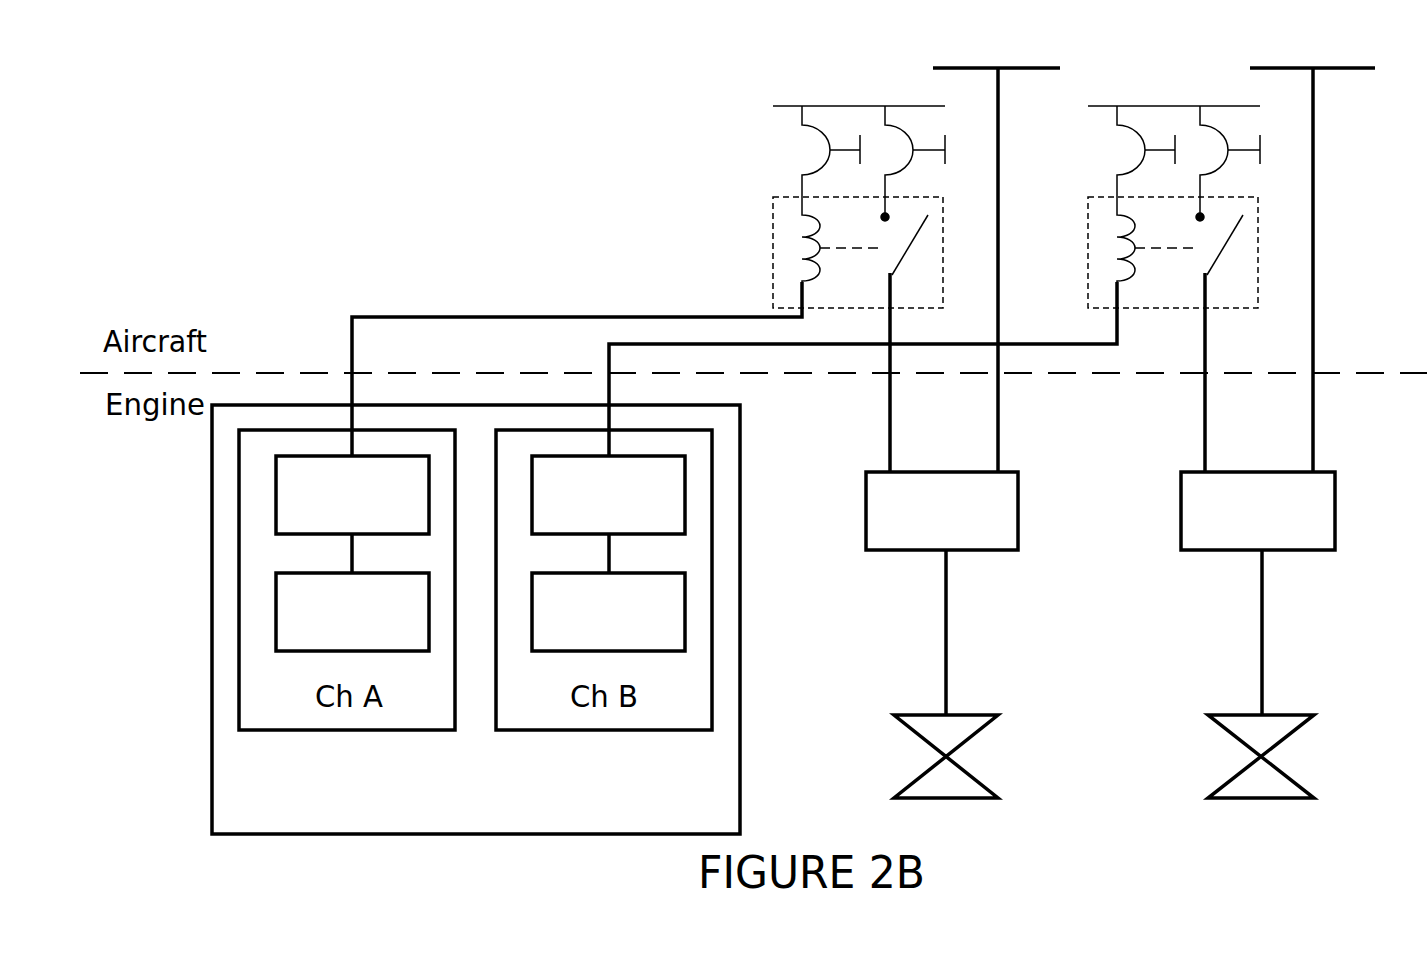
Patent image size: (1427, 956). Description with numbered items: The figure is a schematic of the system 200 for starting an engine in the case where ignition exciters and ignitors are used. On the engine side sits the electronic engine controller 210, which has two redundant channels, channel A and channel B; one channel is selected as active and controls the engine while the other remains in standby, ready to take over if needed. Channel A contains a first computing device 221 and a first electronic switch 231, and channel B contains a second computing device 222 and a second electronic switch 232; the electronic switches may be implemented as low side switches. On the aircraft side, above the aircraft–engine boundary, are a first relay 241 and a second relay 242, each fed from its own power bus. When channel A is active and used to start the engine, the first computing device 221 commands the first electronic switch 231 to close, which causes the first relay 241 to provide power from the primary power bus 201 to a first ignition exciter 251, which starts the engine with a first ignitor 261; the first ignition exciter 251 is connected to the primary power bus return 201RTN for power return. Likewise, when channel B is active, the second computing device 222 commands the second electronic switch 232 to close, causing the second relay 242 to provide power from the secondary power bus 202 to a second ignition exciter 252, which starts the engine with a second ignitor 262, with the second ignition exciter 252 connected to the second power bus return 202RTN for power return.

The system for starting an engine 200 is at (340, 95).
The primary power bus 201 is at (860, 107).
The primary power bus return 201RTN is at (1040, 68).
The secondary power bus 202 is at (1173, 136).
The second power bus return 202RTN is at (1358, 68).
The electronic engine controller 210 is at (450, 812).
The first computing device 221 is at (326, 631).
The second computing device 222 is at (583, 631).
The first electronic switch 231 is at (326, 514).
The second electronic switch 232 is at (583, 514).
The first relay 241 is at (752, 139).
The second relay 242 is at (1133, 207).
The first ignition exciter 251 is at (916, 527).
The second ignition exciter 252 is at (1232, 527).
The first ignitor 261 is at (918, 715).
The second ignitor 262 is at (1240, 715).